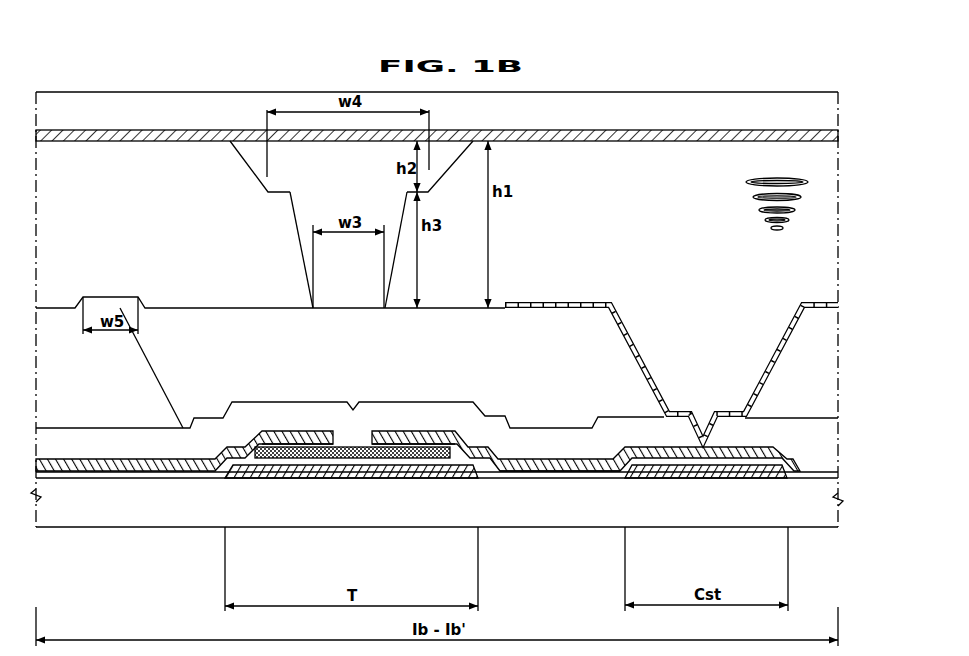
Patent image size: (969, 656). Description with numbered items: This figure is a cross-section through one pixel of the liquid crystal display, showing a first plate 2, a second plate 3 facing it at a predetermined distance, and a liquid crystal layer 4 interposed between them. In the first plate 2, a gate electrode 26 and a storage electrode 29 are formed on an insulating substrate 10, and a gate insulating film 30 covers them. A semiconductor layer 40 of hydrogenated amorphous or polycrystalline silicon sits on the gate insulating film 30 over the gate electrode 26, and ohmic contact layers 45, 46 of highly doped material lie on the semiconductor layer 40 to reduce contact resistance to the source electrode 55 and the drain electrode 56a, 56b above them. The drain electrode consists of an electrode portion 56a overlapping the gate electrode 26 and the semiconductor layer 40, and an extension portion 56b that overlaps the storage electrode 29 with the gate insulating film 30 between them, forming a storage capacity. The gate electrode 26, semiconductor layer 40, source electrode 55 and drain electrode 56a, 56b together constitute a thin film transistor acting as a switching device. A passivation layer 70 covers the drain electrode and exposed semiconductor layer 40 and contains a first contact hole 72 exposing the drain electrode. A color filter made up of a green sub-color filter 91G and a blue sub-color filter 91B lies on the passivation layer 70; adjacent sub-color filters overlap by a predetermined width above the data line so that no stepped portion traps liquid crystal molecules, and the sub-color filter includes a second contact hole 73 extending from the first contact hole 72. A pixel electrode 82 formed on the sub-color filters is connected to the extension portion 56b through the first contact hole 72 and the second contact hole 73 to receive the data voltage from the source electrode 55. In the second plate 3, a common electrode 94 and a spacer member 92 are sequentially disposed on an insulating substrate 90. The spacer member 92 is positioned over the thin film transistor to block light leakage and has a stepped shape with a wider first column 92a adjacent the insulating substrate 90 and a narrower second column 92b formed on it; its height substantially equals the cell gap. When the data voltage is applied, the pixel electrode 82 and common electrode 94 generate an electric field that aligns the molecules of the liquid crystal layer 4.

The first plate 2 is at (472, 411).
The second plate 3 is at (470, 124).
The liquid crystal layer 4 is at (801, 194).
The insulating substrate 10 is at (293, 516).
The gate electrode 26 is at (348, 476).
The storage electrode 29 is at (687, 478).
The gate insulating film 30 is at (507, 476).
The semiconductor layer 40 is at (385, 458).
The ohmic contact layer 45 is at (313, 441).
The ohmic contact layer 46 is at (383, 437).
The source electrode 55 is at (273, 436).
The electrode portion of the drain electrode 56a is at (420, 437).
The extension portion of the drain electrode 56b is at (640, 458).
The passivation layer 70 is at (497, 428).
The first contact hole 72 is at (703, 409).
The second contact hole 73 is at (739, 326).
The pixel electrode 82 is at (572, 302).
The insulating substrate 90 is at (828, 110).
The green sub-color filter 91G is at (53, 326).
The blue sub-color filter 91B is at (500, 308).
The spacer member 92 is at (311, 224).
The first column 92a is at (258, 170).
The second column 92b is at (297, 210).
The common electrode 94 is at (457, 141).